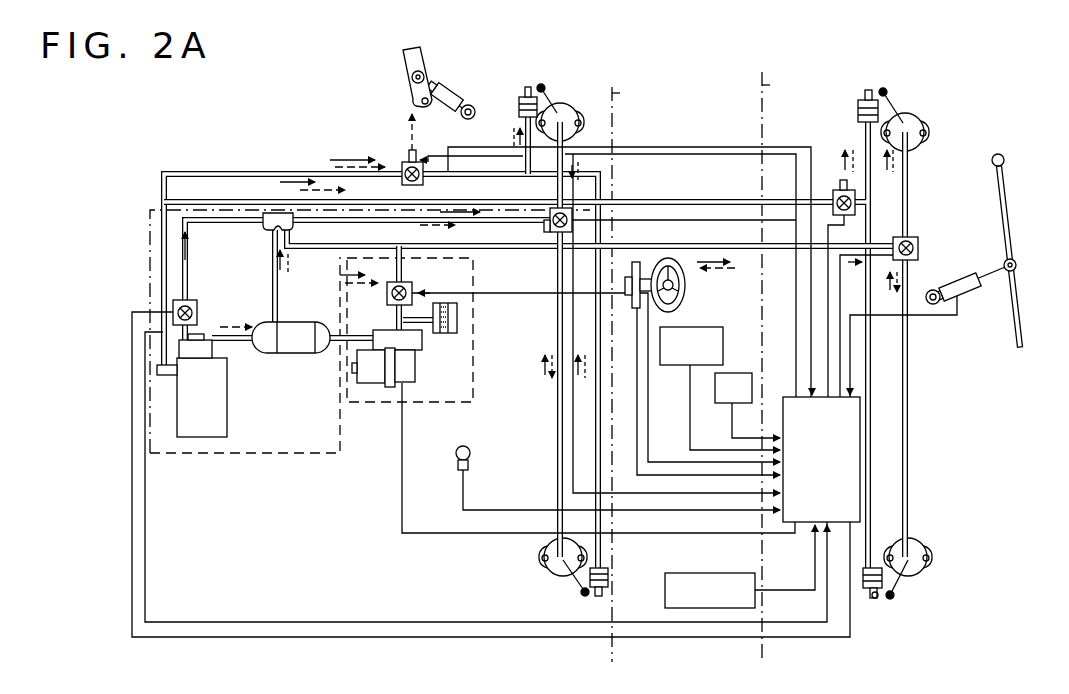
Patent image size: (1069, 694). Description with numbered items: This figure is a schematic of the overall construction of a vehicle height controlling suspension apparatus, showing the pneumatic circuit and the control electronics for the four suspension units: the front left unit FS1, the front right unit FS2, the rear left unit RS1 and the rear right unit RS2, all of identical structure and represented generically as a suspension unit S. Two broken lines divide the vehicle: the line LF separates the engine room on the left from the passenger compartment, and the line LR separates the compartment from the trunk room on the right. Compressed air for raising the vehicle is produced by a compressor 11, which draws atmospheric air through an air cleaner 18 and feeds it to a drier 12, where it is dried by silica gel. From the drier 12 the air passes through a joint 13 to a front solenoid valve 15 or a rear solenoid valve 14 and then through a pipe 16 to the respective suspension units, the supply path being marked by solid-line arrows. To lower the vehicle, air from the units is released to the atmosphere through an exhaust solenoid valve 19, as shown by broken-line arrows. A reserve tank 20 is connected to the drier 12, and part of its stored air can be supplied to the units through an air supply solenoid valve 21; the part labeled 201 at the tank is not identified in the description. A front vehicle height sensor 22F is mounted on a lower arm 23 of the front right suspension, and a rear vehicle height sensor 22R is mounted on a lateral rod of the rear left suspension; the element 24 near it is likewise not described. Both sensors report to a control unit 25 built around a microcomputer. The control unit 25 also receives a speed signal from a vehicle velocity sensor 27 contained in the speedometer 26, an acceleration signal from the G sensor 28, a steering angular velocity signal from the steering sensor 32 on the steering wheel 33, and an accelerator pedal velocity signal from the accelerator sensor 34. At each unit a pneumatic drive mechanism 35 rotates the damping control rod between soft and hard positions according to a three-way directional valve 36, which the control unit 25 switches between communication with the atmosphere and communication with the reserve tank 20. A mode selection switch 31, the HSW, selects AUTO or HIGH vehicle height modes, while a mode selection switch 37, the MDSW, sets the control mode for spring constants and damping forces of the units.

The compressor 11 is at (416, 378).
The drier 12 is at (295, 355).
The joint 13 is at (266, 232).
The rear solenoid valve 14 is at (918, 240).
The front solenoid valve 15 is at (549, 224).
The pipe 16 is at (913, 290).
The air cleaner 18 is at (446, 334).
The exhaust solenoid valve 19 is at (412, 285).
The reserve tank 20 is at (228, 426).
The tank cap 201 is at (200, 335).
The air supply solenoid valve 21 is at (195, 302).
The front vehicle height sensor 22F is at (455, 92).
The rear vehicle height sensor 22R is at (963, 276).
The lower arm 23 is at (425, 55).
The control lever 24 is at (1012, 182).
The control unit 25 is at (803, 524).
The speedometer 26 is at (636, 262).
The vehicle velocity sensor 27 is at (625, 299).
The acceleration sensor 28 is at (740, 373).
The mode selection switch 31 is at (723, 340).
The steering sensor 32 is at (652, 270).
The steering wheel 33 is at (686, 286).
The accelerator sensor 34 is at (471, 455).
The pneumatic drive mechanism 35 is at (519, 105).
The 3-way directional valve 36 is at (404, 166).
The mode selection switch 37 is at (698, 573).
The front left wheel suspension unit FS1 is at (556, 575).
The front right wheel suspension unit FS2 is at (551, 103).
The rear left wheel suspension unit RS1 is at (925, 568).
The rear right wheel suspension unit RS2 is at (922, 118).
The suspension unit S is at (578, 108).
The boundary line LF is at (636, 364).
The boundary line LR is at (786, 364).